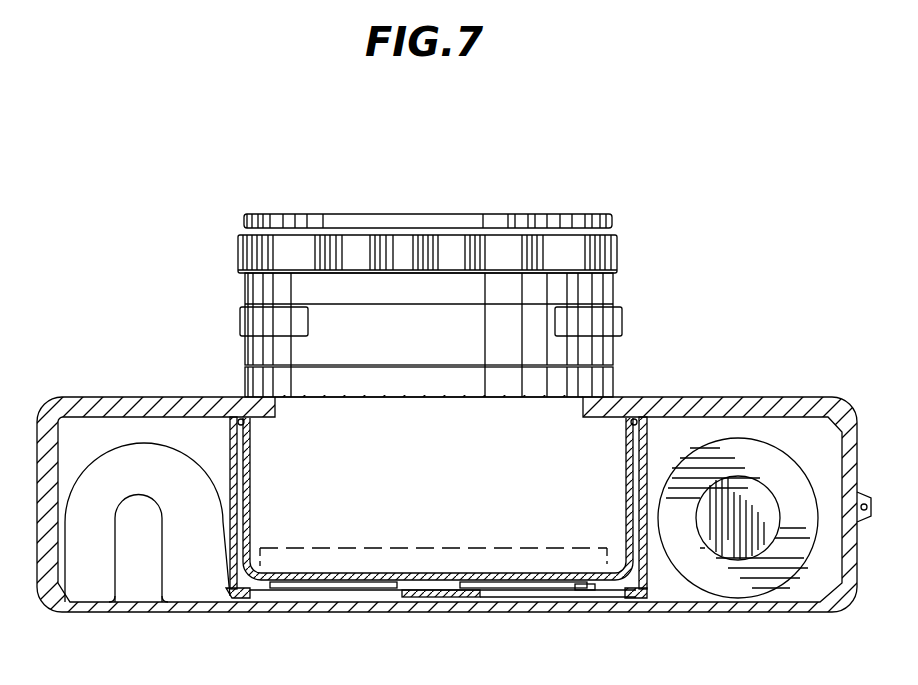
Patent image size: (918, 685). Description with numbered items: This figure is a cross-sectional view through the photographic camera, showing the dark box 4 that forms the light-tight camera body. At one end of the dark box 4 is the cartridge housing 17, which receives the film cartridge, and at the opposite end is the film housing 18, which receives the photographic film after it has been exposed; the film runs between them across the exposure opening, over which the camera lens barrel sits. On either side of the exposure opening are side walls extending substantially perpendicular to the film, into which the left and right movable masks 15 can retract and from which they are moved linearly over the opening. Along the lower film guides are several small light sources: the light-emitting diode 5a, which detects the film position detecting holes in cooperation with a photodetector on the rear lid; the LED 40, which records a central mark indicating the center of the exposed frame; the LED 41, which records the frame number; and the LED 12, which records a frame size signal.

The dark box 4 is at (305, 535).
The light-emitting diode 5a is at (562, 588).
The LED 12 is at (470, 594).
The movable masks 15 is at (644, 590).
The cartridge housing 17 is at (142, 585).
The film housing 18 is at (745, 430).
The LED 40 is at (429, 594).
The LED 41 is at (402, 594).